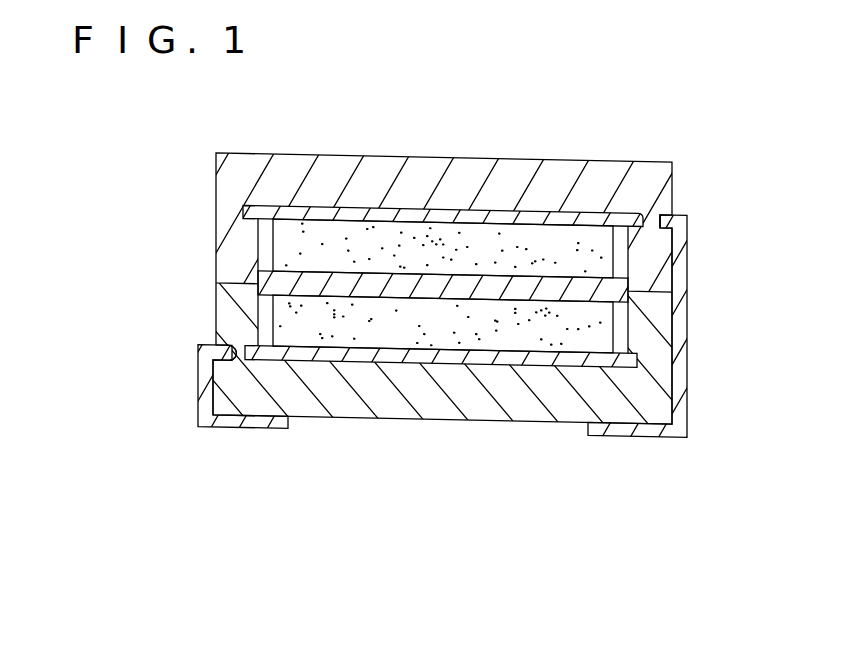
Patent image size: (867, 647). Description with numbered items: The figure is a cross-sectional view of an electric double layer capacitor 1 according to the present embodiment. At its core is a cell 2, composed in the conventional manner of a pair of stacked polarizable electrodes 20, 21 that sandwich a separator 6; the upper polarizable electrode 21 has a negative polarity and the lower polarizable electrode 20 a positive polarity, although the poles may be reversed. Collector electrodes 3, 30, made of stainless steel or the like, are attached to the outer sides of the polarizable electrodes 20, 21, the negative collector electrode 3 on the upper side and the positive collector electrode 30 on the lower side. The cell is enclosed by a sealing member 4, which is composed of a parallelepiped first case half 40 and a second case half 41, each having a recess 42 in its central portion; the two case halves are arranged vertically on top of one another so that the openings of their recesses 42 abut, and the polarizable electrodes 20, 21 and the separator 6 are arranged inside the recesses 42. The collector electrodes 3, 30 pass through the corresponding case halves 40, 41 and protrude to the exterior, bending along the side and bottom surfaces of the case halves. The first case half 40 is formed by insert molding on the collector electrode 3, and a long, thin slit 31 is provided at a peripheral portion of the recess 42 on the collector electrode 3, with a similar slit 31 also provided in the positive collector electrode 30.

The electric double layer capacitor 1 is at (433, 310).
The cell 2 is at (446, 286).
The collector electrode 3 is at (446, 286).
The sealing member 4 is at (381, 282).
The separator 6 is at (446, 286).
The polarizable electrode 20 is at (443, 248).
The polarizable electrode 21 is at (443, 324).
The collector electrode 30 is at (229, 290).
The slit 31 is at (443, 287).
The first case half 40 is at (370, 223).
The second case half 41 is at (381, 313).
The recess 42 is at (619, 298).